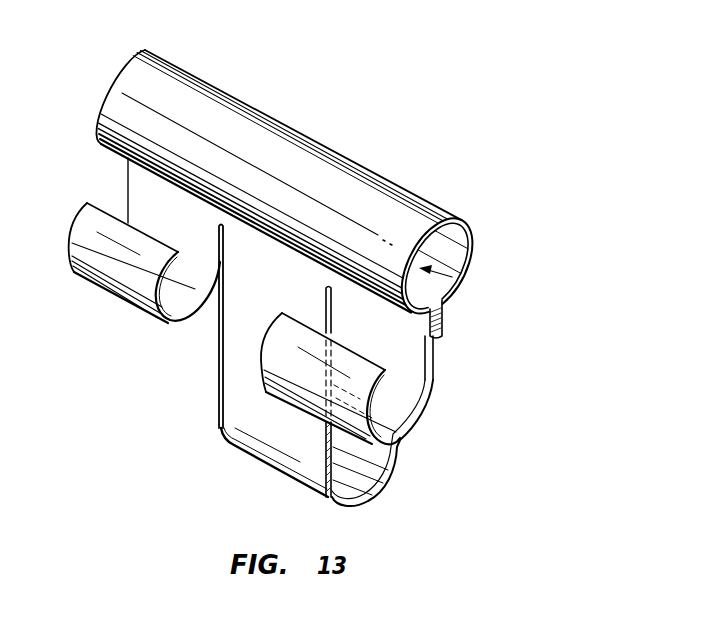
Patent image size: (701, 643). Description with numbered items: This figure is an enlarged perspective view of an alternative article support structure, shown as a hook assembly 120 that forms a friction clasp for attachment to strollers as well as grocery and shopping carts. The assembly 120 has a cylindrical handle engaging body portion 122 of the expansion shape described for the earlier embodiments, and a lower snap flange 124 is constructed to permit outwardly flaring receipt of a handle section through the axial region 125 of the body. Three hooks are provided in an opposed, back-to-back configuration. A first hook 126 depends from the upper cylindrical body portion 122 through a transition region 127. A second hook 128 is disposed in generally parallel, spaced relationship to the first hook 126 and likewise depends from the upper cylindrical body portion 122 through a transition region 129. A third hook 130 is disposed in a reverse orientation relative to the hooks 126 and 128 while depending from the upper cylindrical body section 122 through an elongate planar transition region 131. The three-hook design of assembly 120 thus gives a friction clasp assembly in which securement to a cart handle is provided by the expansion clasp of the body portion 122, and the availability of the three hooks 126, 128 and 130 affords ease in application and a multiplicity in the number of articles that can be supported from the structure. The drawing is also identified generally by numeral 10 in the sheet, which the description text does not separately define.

The clip assembly 10 is at (433, 171).
The hook assembly 120 is at (307, 132).
The cylindrical handle engaging body portion 122 is at (472, 263).
The lower snap flange 124 is at (442, 334).
The axial region 125 is at (460, 283).
The first hook 126 is at (118, 287).
The transition region 127 is at (132, 178).
The second hook 128 is at (413, 430).
The transition region 129 is at (416, 357).
The third hook 130 is at (273, 455).
The elongate planar transition region 131 is at (237, 327).